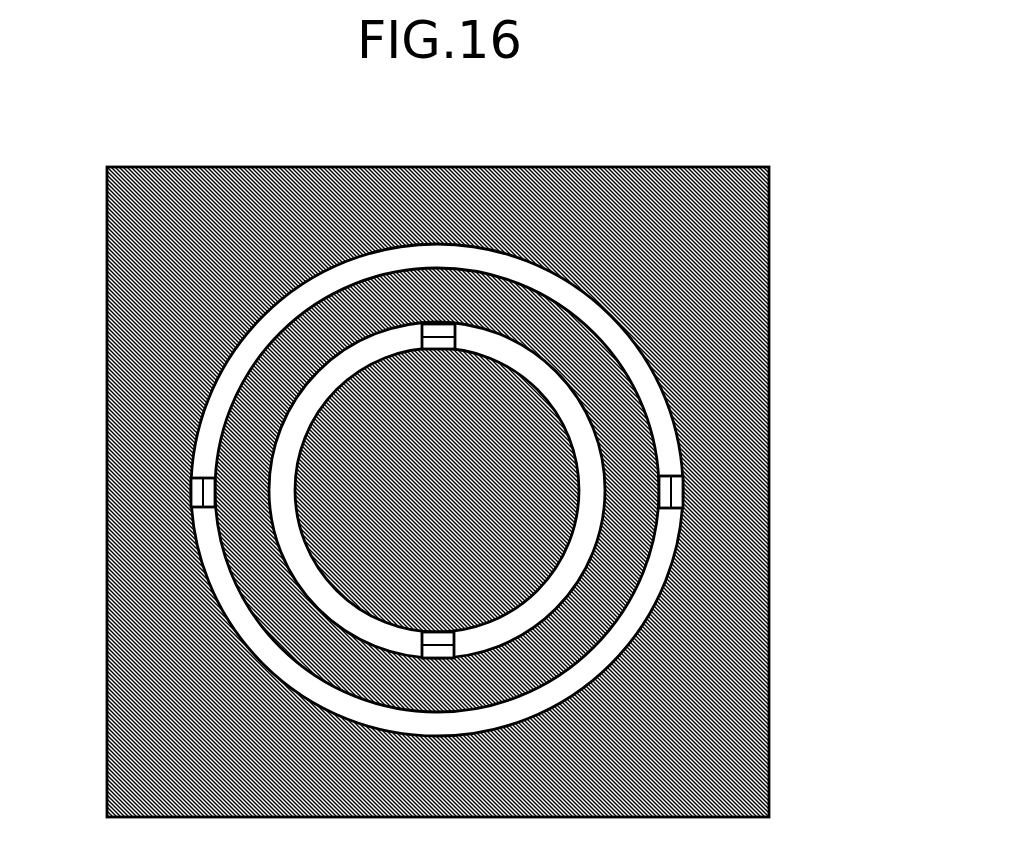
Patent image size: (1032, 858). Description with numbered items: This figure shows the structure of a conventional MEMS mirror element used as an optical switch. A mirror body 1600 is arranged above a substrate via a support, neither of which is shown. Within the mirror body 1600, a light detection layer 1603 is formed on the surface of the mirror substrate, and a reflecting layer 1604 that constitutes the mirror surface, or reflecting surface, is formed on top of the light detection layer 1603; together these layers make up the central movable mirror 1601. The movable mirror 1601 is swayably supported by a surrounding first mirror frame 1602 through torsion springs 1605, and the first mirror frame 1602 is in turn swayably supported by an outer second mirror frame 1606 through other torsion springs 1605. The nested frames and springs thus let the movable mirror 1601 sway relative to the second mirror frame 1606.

The mirror body 1600 is at (636, 150).
The movable mirror 1601 is at (335, 432).
The first mirror frame 1602 is at (630, 425).
The light detection layer 1603 is at (520, 580).
The reflecting layer 1604 is at (535, 547).
The torsion springs 1605 is at (455, 335).
The second mirror frame 1606 is at (769, 770).